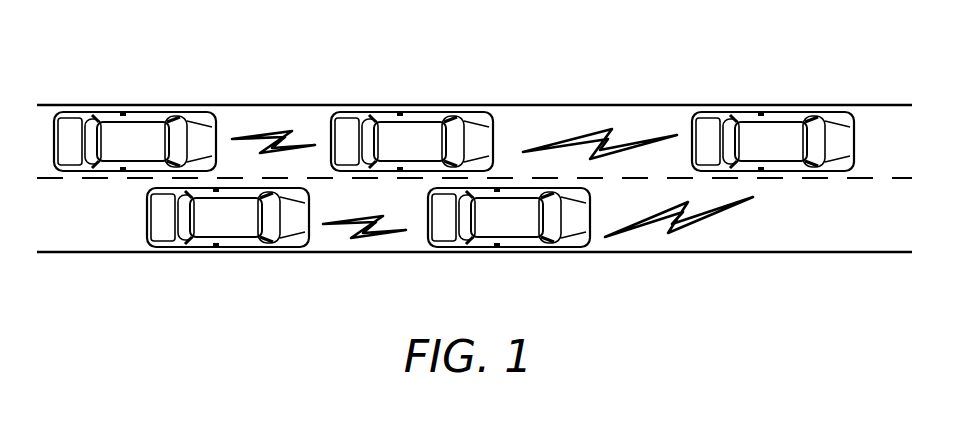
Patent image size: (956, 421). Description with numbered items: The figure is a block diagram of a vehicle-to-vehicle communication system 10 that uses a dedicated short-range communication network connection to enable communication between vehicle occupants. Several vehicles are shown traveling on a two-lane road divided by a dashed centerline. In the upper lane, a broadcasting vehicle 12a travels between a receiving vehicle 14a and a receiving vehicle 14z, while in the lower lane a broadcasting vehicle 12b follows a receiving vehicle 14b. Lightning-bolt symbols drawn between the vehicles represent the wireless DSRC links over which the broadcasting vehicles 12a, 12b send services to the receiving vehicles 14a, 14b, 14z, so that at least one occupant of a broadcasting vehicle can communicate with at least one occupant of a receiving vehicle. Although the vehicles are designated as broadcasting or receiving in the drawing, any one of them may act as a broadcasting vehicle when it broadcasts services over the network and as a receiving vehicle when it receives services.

The vehicle-to-vehicle (V2V) communication system 10 is at (561, 52).
The broadcasting vehicle 12a is at (399, 117).
The broadcasting vehicle 12b is at (428, 206).
The receiving vehicle 14a is at (122, 116).
The receiving vehicle 14b is at (146, 206).
The receiving vehicle 14z is at (766, 117).